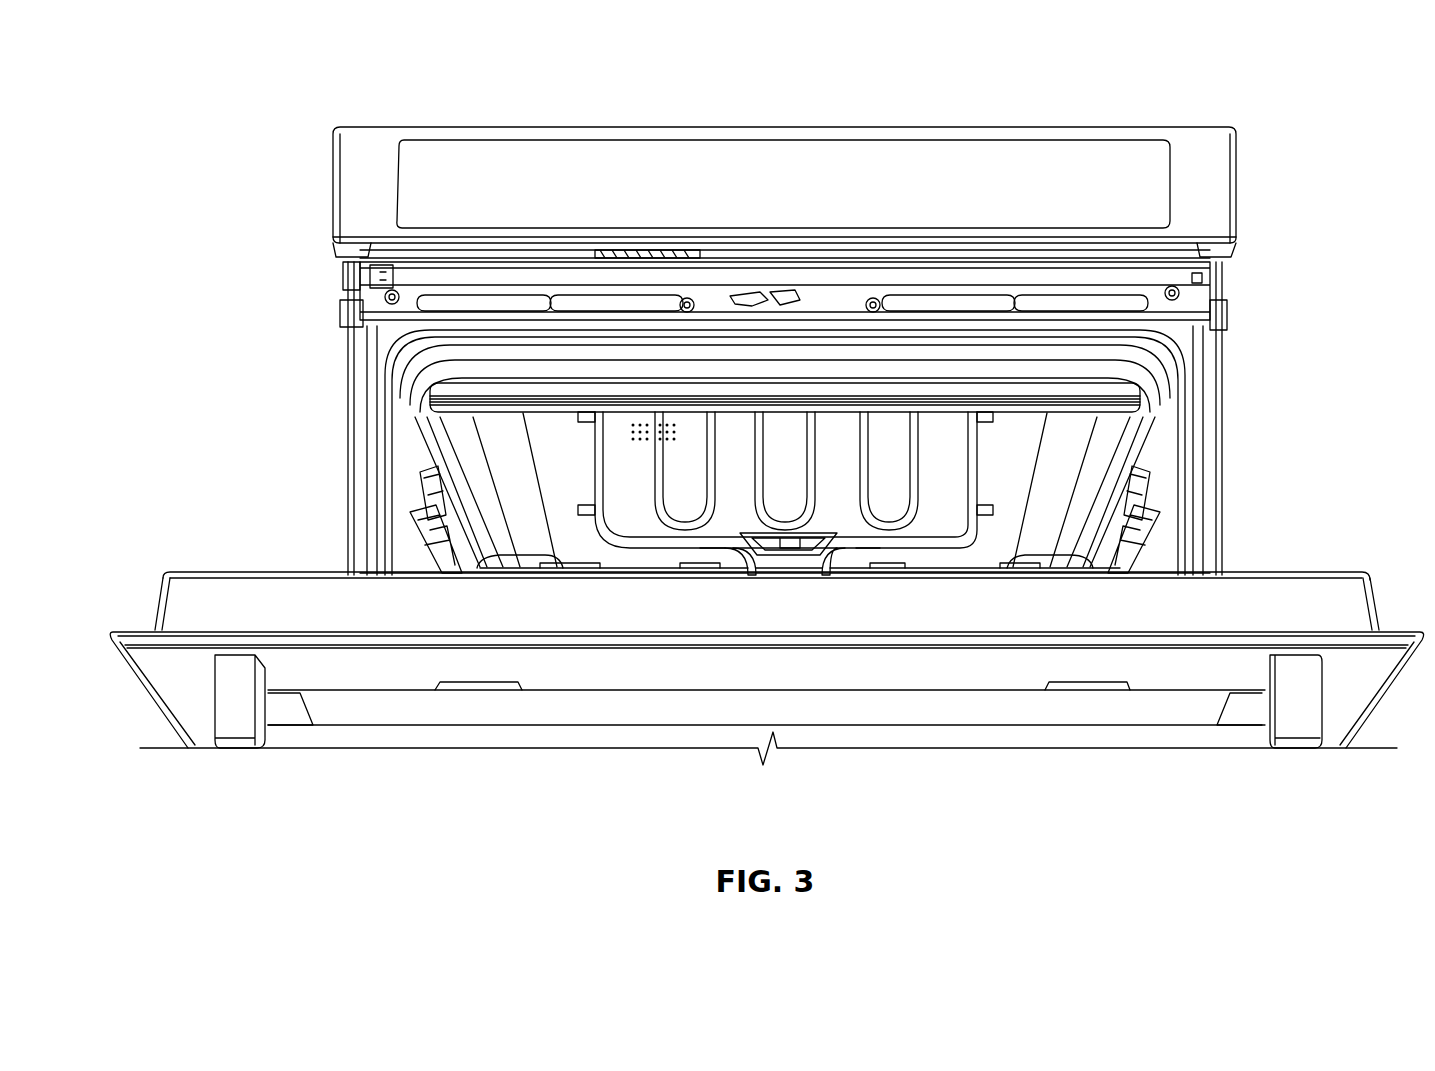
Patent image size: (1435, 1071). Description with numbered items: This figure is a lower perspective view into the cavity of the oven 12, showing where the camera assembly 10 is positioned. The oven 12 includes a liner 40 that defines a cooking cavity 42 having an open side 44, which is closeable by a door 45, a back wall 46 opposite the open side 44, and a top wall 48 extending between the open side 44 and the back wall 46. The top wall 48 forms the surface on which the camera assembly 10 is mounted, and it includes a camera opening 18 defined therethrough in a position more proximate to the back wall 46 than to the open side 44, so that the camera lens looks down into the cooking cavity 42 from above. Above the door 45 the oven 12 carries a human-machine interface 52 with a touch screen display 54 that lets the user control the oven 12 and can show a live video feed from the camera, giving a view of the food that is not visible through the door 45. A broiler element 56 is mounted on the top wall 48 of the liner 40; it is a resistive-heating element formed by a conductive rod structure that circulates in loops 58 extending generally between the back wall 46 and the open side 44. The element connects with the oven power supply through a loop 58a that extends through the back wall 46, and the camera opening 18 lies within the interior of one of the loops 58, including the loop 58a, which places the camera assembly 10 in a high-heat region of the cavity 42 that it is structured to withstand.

The camera assembly 10 is at (746, 556).
The oven 12 is at (1293, 128).
The camera opening 18 is at (824, 562).
The liner 40 is at (1162, 491).
The cooking cavity 42 is at (1102, 490).
The open side 44 is at (392, 404).
The door 45 is at (203, 590).
The back wall 46 is at (538, 564).
The top wall 48 is at (993, 552).
The human-machine interface 52 is at (1144, 144).
The touch screen display 54 is at (1048, 176).
The broiler element 56 is at (590, 467).
The loops 58 is at (684, 476).
The loop connecting with the back wall 58a is at (850, 544).